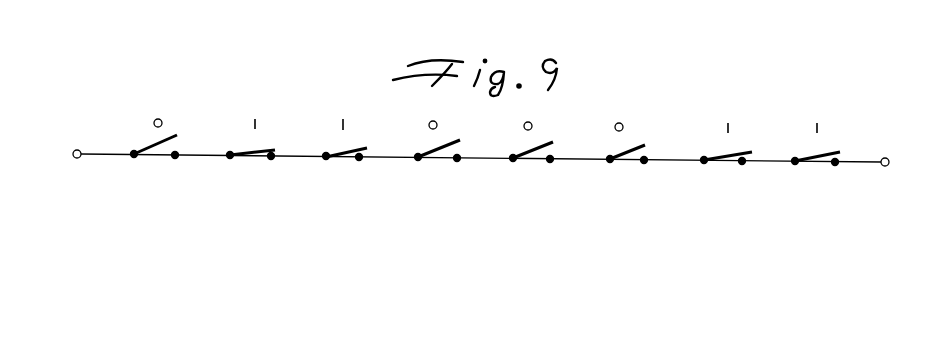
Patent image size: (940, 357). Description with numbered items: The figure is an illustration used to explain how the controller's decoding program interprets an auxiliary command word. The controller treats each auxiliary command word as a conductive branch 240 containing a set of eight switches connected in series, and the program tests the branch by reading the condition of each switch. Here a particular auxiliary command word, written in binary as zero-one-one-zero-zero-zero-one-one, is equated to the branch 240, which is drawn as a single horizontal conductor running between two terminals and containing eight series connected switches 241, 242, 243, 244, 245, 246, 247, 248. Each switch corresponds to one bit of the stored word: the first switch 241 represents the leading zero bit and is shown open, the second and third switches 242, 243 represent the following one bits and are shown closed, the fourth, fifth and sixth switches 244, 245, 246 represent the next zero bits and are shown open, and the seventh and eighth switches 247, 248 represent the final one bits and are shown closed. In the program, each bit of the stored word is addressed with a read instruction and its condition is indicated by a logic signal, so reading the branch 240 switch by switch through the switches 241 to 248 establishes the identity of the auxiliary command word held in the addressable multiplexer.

The branch 240 is at (205, 108).
The series connected switch 241 is at (149, 157).
The series connected switch 242 is at (253, 159).
The series connected switch 243 is at (346, 161).
The series connected switch 244 is at (441, 161).
The series connected switch 245 is at (534, 162).
The series connected switch 246 is at (627, 161).
The series connected switch 247 is at (725, 163).
The series connected switch 248 is at (822, 164).